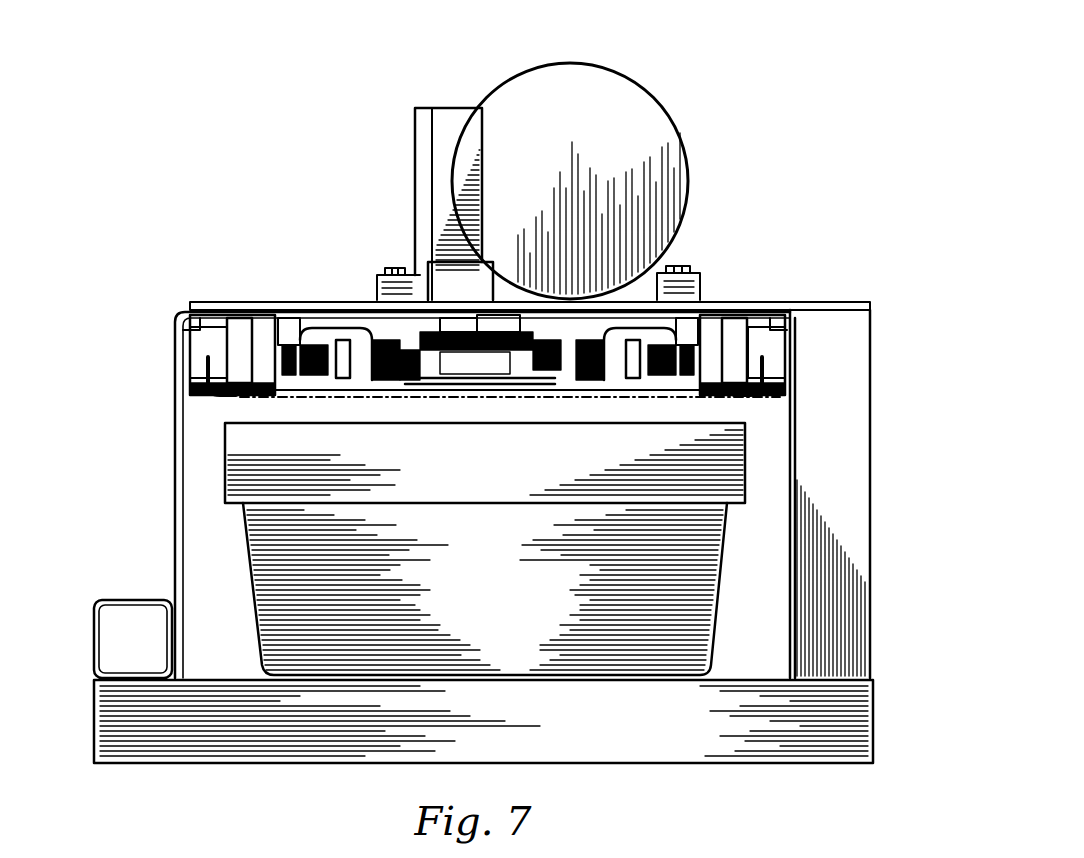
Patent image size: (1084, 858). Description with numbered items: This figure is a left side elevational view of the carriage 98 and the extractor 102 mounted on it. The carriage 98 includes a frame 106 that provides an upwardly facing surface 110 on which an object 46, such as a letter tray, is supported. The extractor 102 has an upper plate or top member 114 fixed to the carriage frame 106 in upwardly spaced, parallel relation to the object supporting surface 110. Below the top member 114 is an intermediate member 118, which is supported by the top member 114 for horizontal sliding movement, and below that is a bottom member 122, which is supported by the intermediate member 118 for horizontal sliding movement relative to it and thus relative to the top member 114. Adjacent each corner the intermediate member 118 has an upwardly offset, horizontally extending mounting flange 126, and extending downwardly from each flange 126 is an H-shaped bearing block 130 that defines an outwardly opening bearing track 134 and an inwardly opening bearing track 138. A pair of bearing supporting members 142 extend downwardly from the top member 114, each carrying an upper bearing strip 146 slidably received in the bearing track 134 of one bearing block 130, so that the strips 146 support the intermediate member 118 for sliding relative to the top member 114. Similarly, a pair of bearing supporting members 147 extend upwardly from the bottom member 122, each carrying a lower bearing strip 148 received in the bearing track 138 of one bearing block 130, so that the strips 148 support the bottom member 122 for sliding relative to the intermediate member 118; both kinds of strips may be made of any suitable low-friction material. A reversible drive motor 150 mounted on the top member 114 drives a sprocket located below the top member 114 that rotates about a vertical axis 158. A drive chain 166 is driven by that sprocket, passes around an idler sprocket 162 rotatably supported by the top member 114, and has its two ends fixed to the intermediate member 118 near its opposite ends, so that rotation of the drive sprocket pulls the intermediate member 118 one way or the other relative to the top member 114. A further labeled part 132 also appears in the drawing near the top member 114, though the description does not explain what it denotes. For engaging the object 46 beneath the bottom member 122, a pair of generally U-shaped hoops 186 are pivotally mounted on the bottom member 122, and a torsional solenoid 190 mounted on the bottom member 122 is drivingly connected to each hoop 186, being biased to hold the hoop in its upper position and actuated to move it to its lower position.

The object 46 is at (500, 574).
The carriage 98 is at (183, 768).
The extractor 102 is at (163, 348).
The frame 106 is at (314, 738).
The upwardly facing surface 110 is at (770, 675).
The top member 114 is at (868, 304).
The intermediate member 118 is at (468, 397).
The bottom member 122 is at (590, 407).
The mounting flange 126 is at (337, 343).
The bearing block 130 is at (310, 377).
The sensor housing 132 is at (478, 330).
The outwardly opening bearing track 134 is at (262, 398).
The inwardly opening bearing track 138 is at (345, 385).
The bearing supporting member 142 is at (262, 335).
The upper bearing strip 146 is at (188, 343).
The bearing supporting member 147 is at (352, 398).
The lower bearing strip 148 is at (360, 340).
The drive motor 150 is at (658, 146).
The vertical axis 158 is at (510, 316).
The idler sprocket 162 is at (475, 363).
The drive chain 166 is at (540, 332).
The hoop 186 is at (443, 395).
The torsional solenoid 190 is at (190, 380).